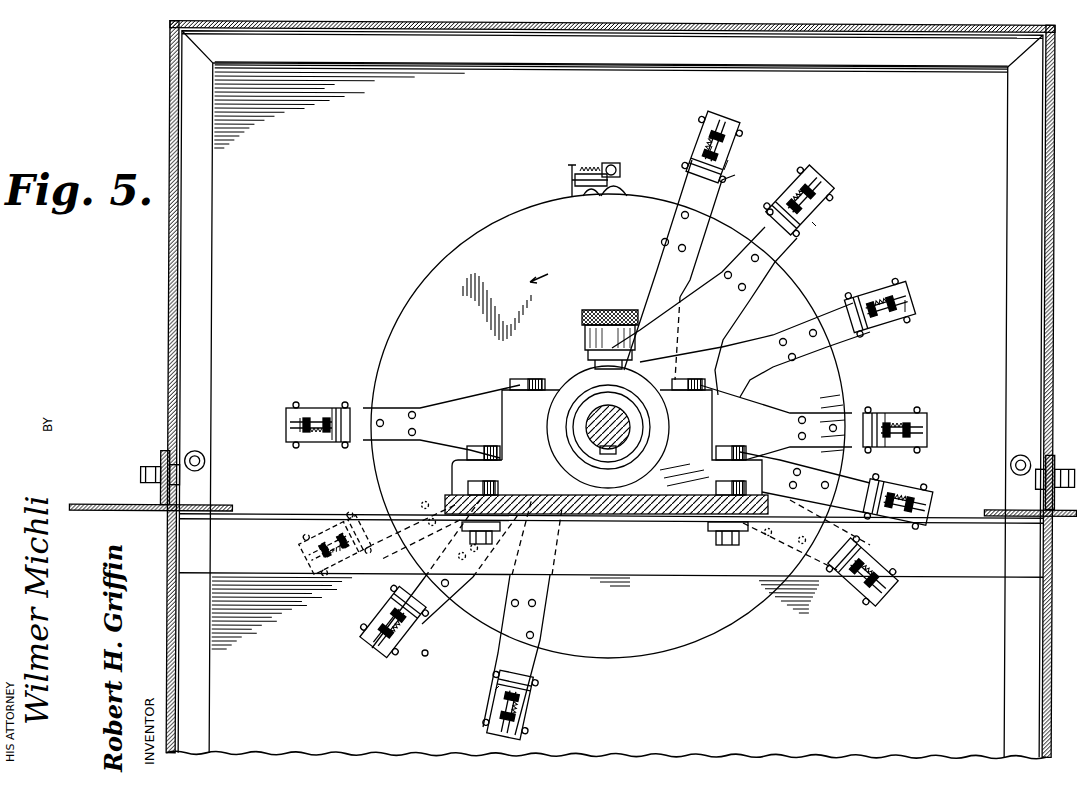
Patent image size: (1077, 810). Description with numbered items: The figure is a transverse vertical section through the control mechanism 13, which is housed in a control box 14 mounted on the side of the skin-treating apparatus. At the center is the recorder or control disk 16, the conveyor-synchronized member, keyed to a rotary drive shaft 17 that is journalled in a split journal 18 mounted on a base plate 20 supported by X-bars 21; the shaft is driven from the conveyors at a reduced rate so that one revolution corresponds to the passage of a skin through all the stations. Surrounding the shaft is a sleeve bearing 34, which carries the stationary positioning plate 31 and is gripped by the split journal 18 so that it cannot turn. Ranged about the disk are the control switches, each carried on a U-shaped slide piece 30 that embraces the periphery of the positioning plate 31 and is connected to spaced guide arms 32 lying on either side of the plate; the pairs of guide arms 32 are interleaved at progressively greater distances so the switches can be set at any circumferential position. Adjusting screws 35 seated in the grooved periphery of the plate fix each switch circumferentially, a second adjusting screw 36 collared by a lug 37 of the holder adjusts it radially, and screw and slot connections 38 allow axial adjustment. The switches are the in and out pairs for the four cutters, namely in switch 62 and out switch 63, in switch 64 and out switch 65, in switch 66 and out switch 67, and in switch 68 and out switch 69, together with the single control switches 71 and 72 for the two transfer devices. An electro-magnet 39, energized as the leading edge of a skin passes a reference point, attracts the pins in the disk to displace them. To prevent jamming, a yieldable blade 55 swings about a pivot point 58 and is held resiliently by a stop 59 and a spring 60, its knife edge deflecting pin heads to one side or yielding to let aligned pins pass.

The control mechanism 13 is at (485, 222).
The control box 14 is at (656, 23).
The recorder disk 16 is at (708, 635).
The rotary drive shaft 17 is at (602, 408).
The split journal 18 is at (685, 482).
The base plate 20 is at (707, 500).
The X-bars 21 is at (945, 575).
The slide piece 30 is at (733, 164).
The stationary positioning plate 31 is at (660, 645).
The guide arms 32 is at (645, 275).
The sleeve bearing 34 is at (623, 462).
The adjusting screws 35 is at (290, 422).
The second adjusting screw 36 is at (815, 224).
The lug 37 is at (332, 408).
The screw and slot connections 38 is at (772, 210).
The electro-magnet 39 is at (624, 191).
The blade 55 is at (571, 192).
The pivot point 58 is at (618, 174).
The stop 59 is at (608, 165).
The spring 60 is at (587, 166).
The in switch 62 is at (295, 559).
The out switch 63 is at (276, 411).
The in switch 64 is at (483, 738).
The out switch 65 is at (368, 655).
The in switch 66 is at (940, 433).
The out switch 67 is at (885, 602).
The in switch 68 is at (832, 183).
The out switch 69 is at (918, 308).
The control switch 71 is at (933, 505).
The control switch 72 is at (722, 123).